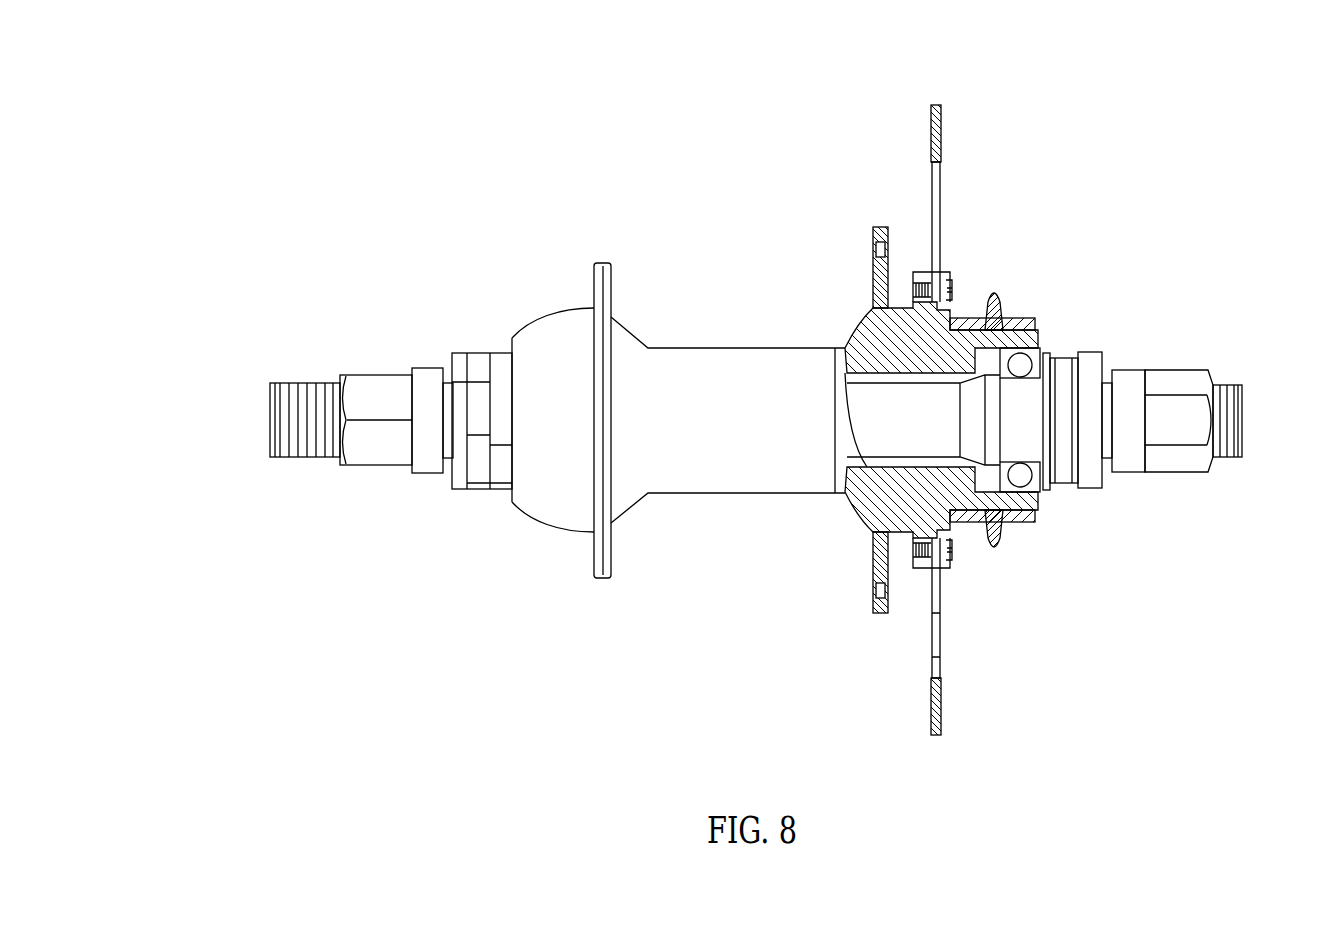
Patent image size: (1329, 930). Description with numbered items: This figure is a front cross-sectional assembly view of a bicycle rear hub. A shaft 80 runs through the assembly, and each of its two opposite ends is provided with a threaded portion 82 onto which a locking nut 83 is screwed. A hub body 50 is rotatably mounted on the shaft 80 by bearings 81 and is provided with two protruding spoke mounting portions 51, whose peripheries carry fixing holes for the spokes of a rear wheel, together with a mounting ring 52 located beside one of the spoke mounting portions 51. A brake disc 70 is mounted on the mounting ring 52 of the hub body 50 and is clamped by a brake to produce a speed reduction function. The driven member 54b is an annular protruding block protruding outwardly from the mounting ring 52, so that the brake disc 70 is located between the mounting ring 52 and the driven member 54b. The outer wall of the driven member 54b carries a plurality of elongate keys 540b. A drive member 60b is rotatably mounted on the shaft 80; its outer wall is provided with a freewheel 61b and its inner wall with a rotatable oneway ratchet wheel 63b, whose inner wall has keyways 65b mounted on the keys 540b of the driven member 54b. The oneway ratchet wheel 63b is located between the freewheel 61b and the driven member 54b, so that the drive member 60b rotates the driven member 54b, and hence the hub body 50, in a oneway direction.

The hub body 50 is at (677, 346).
The spoke mounting portion 51 is at (597, 287).
The mounting ring 52 is at (929, 273).
The brake disc 70 is at (944, 144).
The freewheel 61b is at (1000, 305).
The drive member 60b is at (1058, 531).
The elongate keys 540b is at (1058, 521).
The keyways 65b is at (1018, 523).
The oneway ratchet wheel 63b is at (1035, 523).
The bearing 81 is at (1020, 367).
The driven member 54b is at (1047, 498).
The shaft 80 is at (302, 464).
The threaded portion 82 is at (290, 418).
The locking nut 83 is at (385, 395).